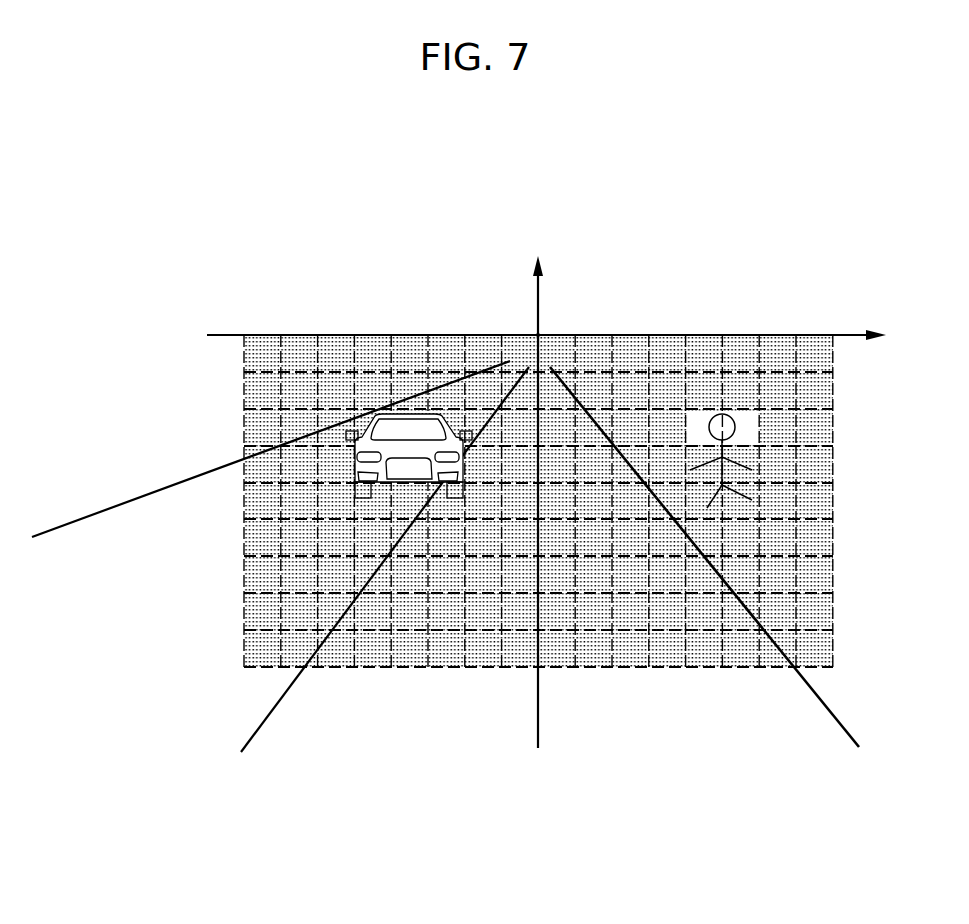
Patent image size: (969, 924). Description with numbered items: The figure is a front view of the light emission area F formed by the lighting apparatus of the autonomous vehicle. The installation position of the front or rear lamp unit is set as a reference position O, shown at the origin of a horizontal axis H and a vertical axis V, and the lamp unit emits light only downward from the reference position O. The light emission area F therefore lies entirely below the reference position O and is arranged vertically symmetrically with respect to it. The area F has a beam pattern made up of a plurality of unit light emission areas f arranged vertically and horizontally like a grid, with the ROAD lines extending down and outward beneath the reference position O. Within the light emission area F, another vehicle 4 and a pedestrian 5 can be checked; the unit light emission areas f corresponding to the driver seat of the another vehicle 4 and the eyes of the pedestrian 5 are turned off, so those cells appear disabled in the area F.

The another vehicle 4 is at (397, 402).
The pedestrian 5 is at (737, 463).
The light emission area F is at (834, 537).
The unit light emission area f is at (782, 390).
The reference position O is at (538, 335).
The horizontal axis H is at (546, 349).
The vertical axis V is at (527, 502).
The road boundary lines ROAD is at (828, 724).